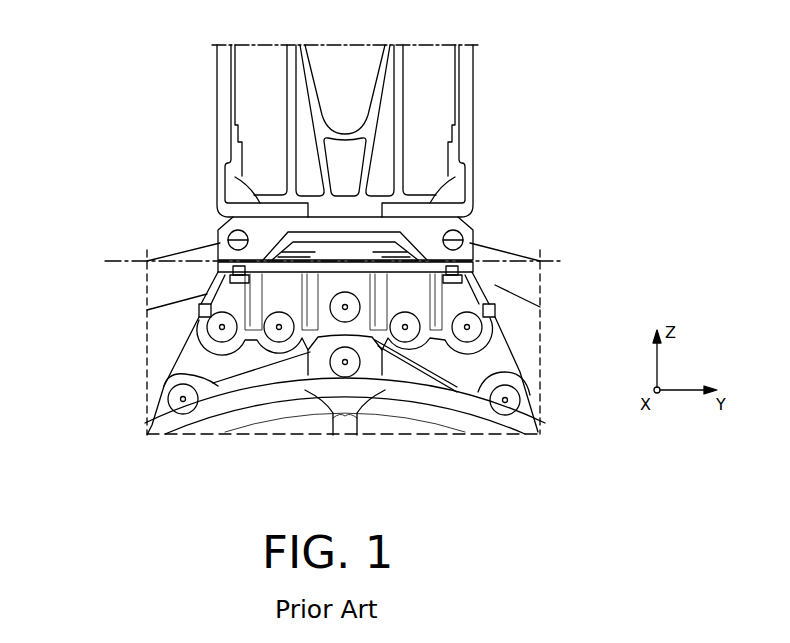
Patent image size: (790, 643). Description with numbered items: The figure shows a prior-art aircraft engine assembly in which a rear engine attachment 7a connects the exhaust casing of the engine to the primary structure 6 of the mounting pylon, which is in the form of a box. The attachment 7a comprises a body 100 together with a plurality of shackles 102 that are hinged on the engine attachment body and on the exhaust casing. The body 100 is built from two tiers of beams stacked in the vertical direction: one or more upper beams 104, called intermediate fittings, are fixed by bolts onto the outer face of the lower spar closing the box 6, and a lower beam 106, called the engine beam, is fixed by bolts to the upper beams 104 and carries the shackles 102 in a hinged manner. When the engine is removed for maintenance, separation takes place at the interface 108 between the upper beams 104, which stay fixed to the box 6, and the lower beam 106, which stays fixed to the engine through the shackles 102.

The primary structure 6 is at (210, 90).
The rear engine attachment 7a is at (497, 281).
The body 100 is at (84, 180).
The shackles 102 is at (207, 366).
The upper beams 104 is at (220, 233).
The lower beams 106 is at (200, 318).
The interface 108 is at (130, 262).